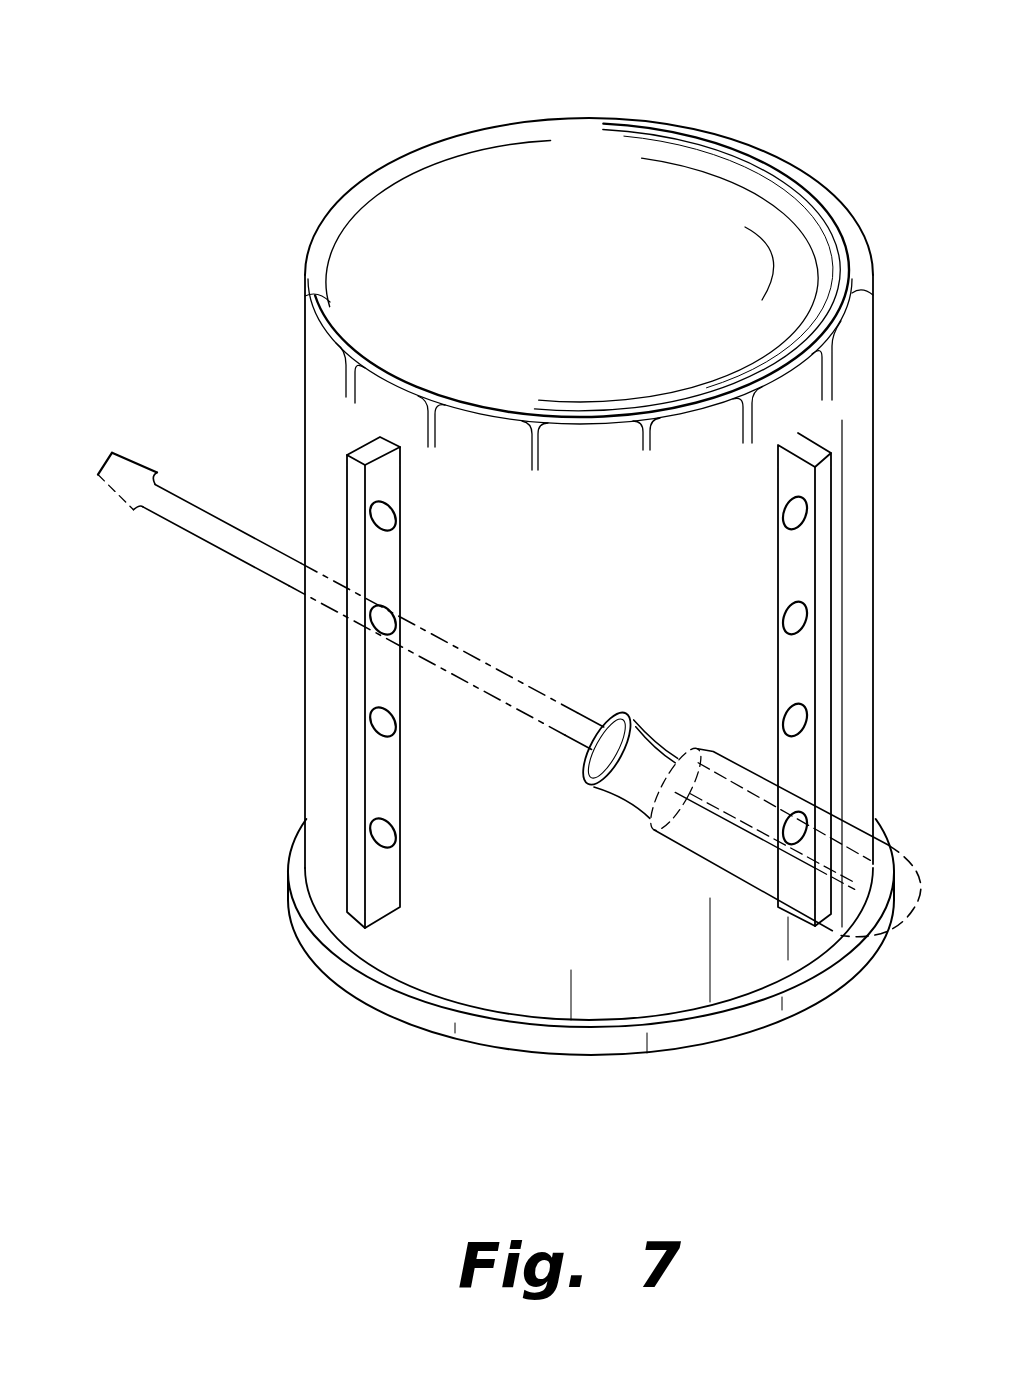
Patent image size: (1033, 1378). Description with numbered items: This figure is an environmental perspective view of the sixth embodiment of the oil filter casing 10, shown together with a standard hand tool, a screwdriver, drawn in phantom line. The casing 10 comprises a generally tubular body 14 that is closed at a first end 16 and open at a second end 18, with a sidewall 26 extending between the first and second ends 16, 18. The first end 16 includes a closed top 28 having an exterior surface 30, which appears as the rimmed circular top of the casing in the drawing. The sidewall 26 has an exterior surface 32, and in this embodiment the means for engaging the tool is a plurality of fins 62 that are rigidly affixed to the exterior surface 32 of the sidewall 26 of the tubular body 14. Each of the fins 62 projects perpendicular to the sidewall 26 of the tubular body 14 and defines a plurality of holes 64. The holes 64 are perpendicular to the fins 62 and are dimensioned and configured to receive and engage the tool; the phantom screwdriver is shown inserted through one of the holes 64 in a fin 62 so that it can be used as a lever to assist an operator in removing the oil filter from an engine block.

The oil filter casing 10 is at (472, 530).
The tubular body 14 is at (461, 601).
The first end 16 is at (503, 221).
The second end 18 is at (277, 921).
The sidewall 26 is at (637, 589).
The closed top 28 is at (594, 258).
The exterior surface 30 is at (695, 207).
The exterior surface 32 is at (326, 725).
The fins 62 is at (489, 643).
The holes 64 is at (385, 738).